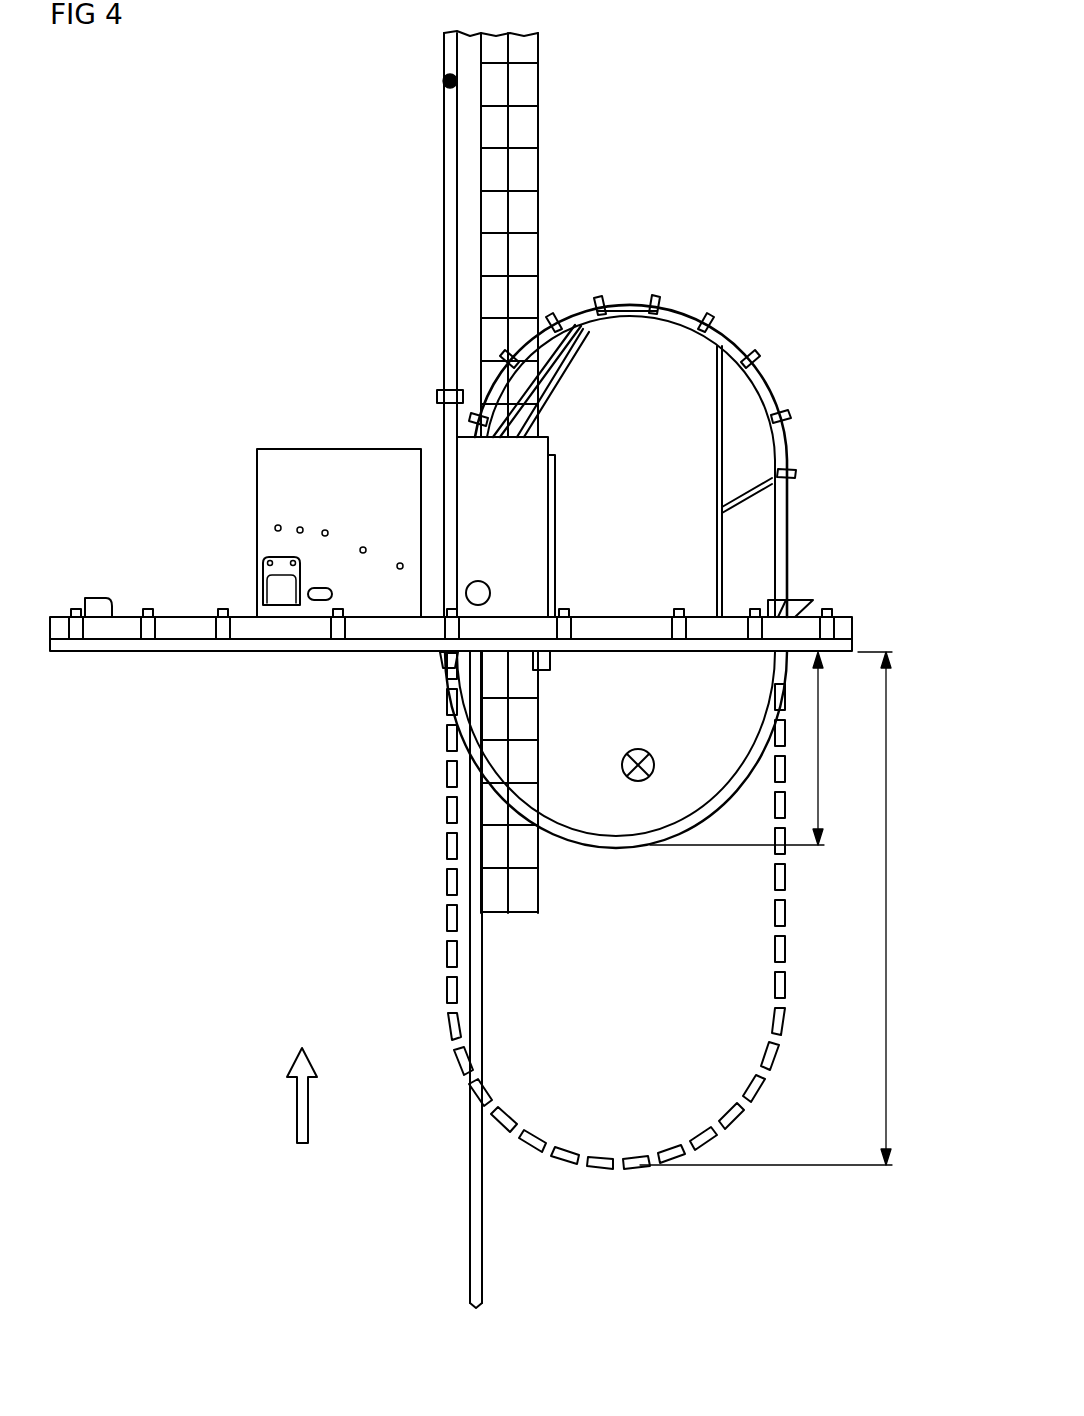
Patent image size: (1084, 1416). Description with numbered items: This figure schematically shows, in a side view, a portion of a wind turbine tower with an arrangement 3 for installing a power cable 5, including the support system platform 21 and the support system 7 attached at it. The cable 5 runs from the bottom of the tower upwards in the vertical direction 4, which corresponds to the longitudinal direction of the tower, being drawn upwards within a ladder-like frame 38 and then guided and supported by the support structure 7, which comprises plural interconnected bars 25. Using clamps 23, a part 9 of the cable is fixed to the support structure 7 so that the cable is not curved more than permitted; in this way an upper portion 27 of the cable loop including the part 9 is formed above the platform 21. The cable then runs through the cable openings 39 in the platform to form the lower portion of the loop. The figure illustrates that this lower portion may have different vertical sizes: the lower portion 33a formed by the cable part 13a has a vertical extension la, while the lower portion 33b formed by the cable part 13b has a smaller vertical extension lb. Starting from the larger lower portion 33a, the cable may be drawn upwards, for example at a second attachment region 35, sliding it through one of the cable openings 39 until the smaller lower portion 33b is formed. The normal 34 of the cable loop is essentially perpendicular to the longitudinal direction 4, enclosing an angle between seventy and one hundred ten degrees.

The arrangement 3 is at (283, 384).
The vertical direction 4 is at (297, 1105).
The power cable 5 is at (474, 1162).
The support system 7 is at (700, 424).
The part of the cable 9 is at (728, 335).
The cable part 13a is at (725, 1108).
The cable part 13b is at (703, 800).
The platform 21 is at (852, 628).
The clamps 23 is at (652, 298).
The bars 25 is at (714, 437).
The upper portion of the cable loop 27 is at (842, 506).
The lower portion of the cable loop 33a is at (657, 911).
The lower portion of the cable loop 33b is at (616, 804).
The normal of the cable loop 34 is at (638, 750).
The second attachment region 35 is at (443, 82).
The ladder-like frame 38 is at (540, 88).
The cable openings 39 is at (795, 600).
The vertical extension la is at (886, 902).
The vertical extension lb is at (818, 742).